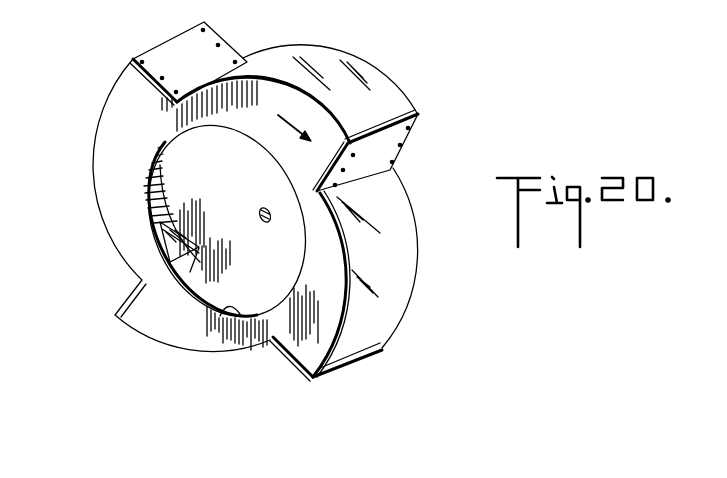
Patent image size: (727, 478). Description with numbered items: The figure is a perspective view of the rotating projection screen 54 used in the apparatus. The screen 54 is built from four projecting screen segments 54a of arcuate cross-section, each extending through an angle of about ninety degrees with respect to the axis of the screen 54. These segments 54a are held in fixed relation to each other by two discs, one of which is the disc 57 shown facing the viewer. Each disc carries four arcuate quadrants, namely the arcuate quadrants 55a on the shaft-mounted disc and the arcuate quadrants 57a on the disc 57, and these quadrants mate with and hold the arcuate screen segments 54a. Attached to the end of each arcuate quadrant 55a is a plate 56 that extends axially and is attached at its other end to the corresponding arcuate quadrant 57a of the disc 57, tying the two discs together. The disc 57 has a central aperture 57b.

The projection screen 54 is at (297, 201).
The screen segment 54a is at (333, 70).
The arcuate quadrant 55a is at (417, 257).
The plate 56 is at (387, 143).
The disc 57 is at (235, 201).
The arcuate quadrant 57a is at (343, 248).
The central aperture 57b is at (231, 320).